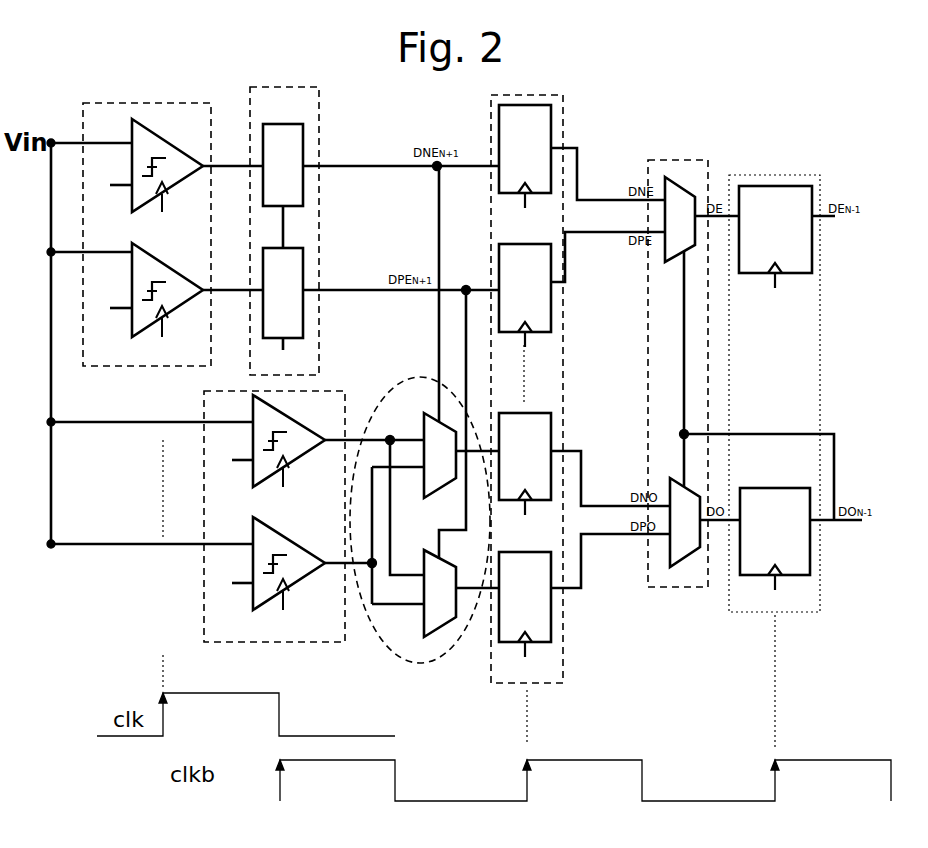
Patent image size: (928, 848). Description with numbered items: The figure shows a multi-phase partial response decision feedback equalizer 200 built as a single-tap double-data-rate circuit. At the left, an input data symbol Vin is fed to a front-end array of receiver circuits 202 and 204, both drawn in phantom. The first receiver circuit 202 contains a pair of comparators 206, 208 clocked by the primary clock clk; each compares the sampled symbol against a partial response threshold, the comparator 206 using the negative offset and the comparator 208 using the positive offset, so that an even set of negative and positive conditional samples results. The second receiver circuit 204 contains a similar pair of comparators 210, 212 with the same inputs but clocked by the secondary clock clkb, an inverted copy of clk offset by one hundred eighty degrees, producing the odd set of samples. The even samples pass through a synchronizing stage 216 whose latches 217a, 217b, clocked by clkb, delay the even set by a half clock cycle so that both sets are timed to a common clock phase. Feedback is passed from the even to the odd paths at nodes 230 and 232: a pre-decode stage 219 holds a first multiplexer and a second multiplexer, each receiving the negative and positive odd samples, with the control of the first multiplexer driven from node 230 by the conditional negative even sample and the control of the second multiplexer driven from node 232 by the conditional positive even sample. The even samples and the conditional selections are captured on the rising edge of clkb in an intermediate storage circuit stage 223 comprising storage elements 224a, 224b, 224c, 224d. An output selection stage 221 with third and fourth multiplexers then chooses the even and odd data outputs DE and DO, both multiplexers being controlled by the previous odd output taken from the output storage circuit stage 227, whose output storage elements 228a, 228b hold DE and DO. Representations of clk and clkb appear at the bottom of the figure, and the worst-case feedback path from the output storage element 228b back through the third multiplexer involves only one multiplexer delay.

The partial response decision feedback equalizer 200 is at (812, 138).
The first receiver circuit 202 is at (83, 110).
The second receiver circuit 204 is at (204, 410).
The comparator 206 is at (172, 138).
The comparator 208 is at (175, 262).
The comparator 210 is at (300, 428).
The comparator 212 is at (300, 552).
The synchronizing stage 216 is at (250, 92).
The latch 217a is at (283, 165).
The latch 217b is at (283, 293).
The pre-decode stage 219 is at (403, 663).
The output selection stage 221 is at (668, 588).
The intermediate storage circuit stage 223 is at (556, 684).
The storage element 224a is at (525, 169).
The storage element 224b is at (525, 308).
The storage element 224c is at (525, 476).
The storage element 224d is at (525, 617).
The output storage circuit stage 227 is at (800, 613).
The output storage element 228a is at (775, 249).
The output storage element 228b is at (775, 551).
The node 230 is at (437, 172).
The node 232 is at (464, 295).